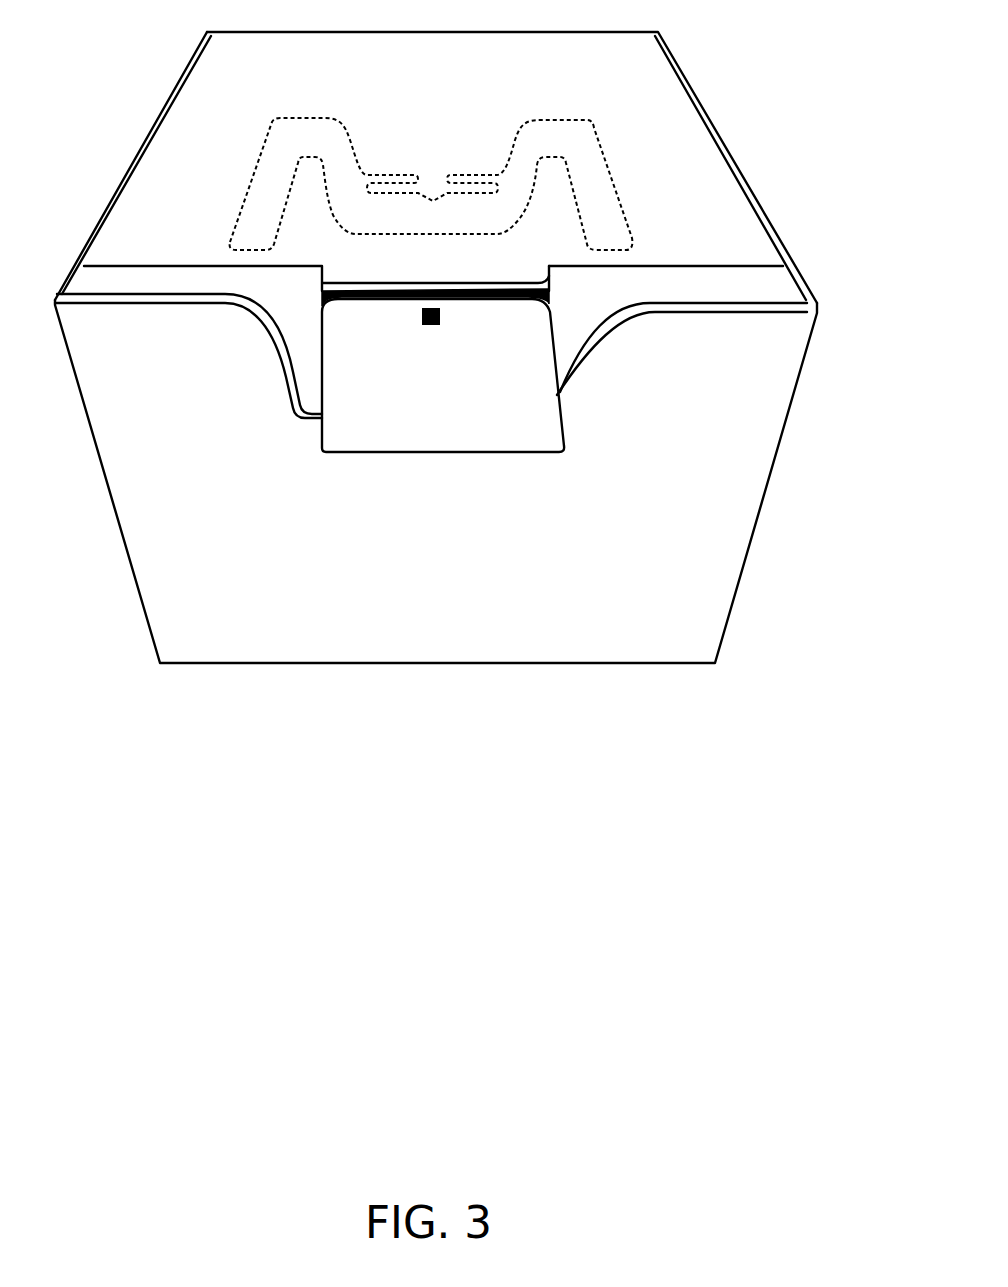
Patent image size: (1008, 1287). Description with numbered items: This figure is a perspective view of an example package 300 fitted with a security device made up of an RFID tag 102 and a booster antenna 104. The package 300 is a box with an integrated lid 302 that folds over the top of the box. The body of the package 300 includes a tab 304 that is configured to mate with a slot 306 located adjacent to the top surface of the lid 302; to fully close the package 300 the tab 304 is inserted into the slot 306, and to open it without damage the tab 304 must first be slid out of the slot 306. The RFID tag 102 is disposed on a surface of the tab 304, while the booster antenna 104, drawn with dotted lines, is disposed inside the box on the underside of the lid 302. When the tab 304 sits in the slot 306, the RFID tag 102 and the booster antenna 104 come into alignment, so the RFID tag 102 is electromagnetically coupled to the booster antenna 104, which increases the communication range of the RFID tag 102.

The package 300 is at (451, 1186).
The lid 302 is at (723, 222).
The booster antenna 104 is at (607, 159).
The slot 306 is at (545, 295).
The tab 304 is at (538, 412).
The RFID tag 102 is at (431, 326).